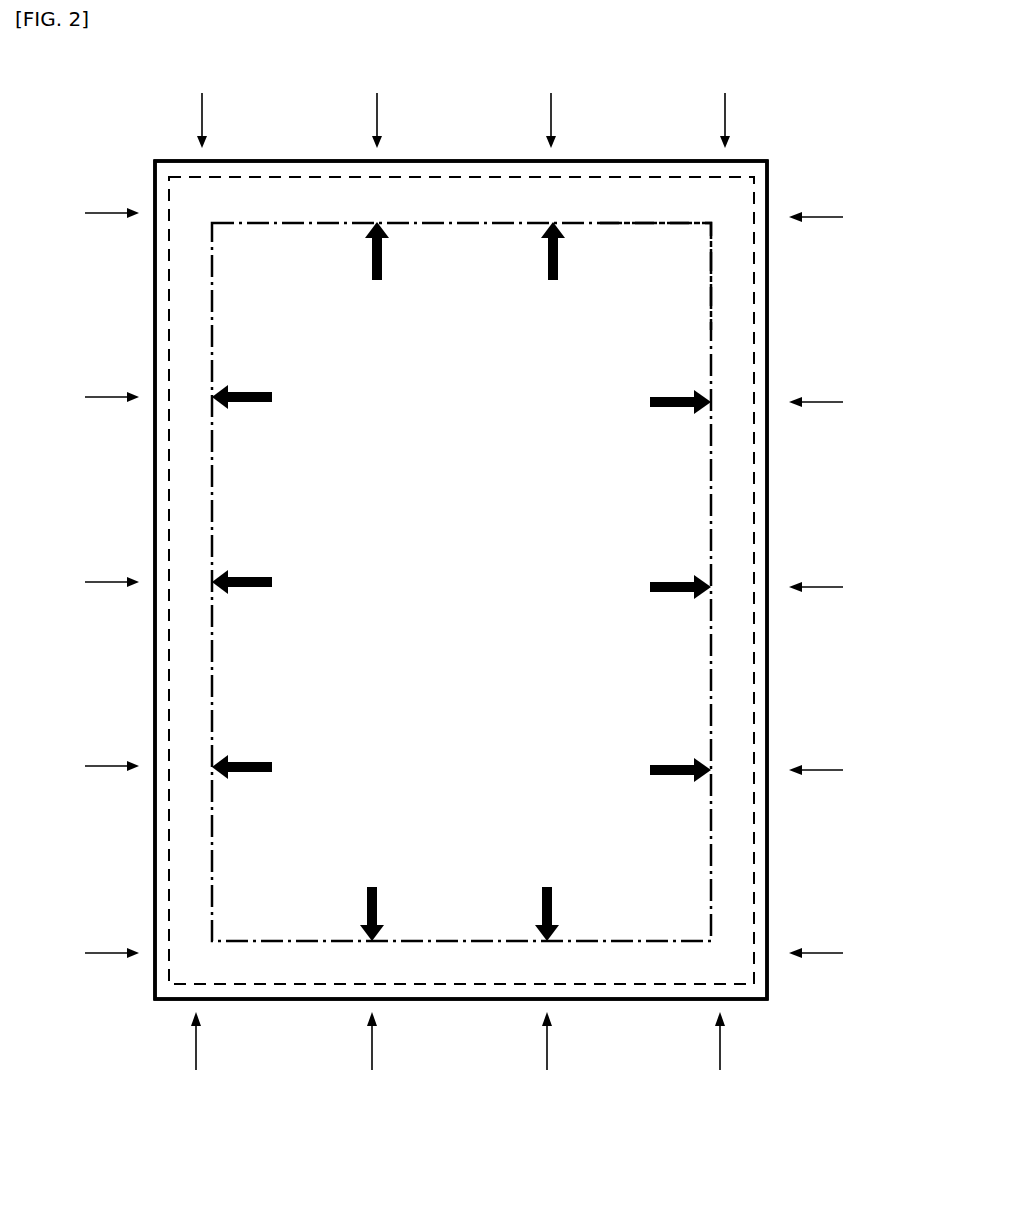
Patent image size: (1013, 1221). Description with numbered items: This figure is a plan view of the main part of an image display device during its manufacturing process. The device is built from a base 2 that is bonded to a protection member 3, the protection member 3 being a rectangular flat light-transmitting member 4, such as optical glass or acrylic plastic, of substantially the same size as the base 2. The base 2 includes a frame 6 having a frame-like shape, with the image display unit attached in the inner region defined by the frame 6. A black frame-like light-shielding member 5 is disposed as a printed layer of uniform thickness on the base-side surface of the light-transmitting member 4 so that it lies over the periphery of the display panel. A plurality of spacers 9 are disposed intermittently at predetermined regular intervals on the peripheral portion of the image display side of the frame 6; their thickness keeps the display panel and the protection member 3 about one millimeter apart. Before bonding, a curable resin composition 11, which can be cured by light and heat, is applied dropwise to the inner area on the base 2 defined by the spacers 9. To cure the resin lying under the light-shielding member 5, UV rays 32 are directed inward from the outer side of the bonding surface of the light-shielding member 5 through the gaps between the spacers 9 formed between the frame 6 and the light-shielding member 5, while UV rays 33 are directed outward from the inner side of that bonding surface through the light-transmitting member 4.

The base 2 is at (598, 140).
The protection member 3 is at (461, 580).
The light-transmitting member 4 is at (768, 348).
The frame 6 is at (461, 580).
The light-shielding member 5 is at (318, 200).
The spacers 9 is at (460, 172).
The curable resin composition 11 is at (697, 250).
The UV rays 32 is at (377, 100).
The UV rays 33 is at (380, 256).